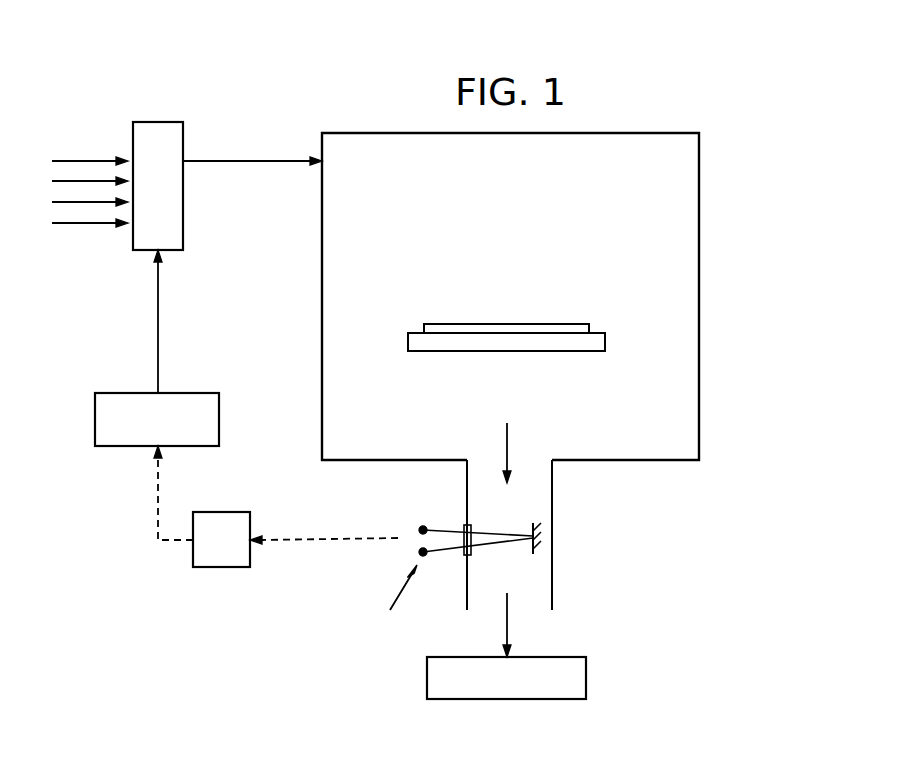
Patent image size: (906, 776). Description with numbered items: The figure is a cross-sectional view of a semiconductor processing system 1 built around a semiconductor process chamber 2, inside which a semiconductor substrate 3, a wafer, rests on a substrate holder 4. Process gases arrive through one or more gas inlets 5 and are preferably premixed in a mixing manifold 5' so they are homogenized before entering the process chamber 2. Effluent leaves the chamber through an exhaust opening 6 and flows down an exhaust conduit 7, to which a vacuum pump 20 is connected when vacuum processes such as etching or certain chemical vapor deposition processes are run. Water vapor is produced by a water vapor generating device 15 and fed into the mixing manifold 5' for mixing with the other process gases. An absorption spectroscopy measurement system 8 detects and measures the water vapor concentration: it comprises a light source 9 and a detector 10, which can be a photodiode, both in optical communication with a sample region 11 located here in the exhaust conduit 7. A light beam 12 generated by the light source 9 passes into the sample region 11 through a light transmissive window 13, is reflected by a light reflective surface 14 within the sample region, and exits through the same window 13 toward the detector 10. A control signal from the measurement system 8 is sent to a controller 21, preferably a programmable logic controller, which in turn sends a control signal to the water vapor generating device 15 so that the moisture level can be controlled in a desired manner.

The semiconductor processing system 1 is at (550, 364).
The semiconductor process chamber 2 is at (699, 296).
The semiconductor substrate 3 is at (589, 328).
The substrate holder 4 is at (408, 342).
The gas inlets 5 is at (90, 158).
The mixing manifold 5' is at (227, 186).
The exhaust opening 6 is at (530, 470).
The exhaust conduit 7 is at (553, 494).
The absorption spectroscopy measurement system 8 is at (395, 601).
The light source 9 is at (419, 552).
The detector 10 is at (419, 530).
The sample region 11 is at (519, 524).
The light beam 12 is at (510, 549).
The light transmissive window 13 is at (466, 525).
The light reflective surface 14 is at (545, 535).
The water vapor generating device 15 is at (145, 437).
The vacuum pump 20 is at (494, 690).
The controller 21 is at (209, 553).